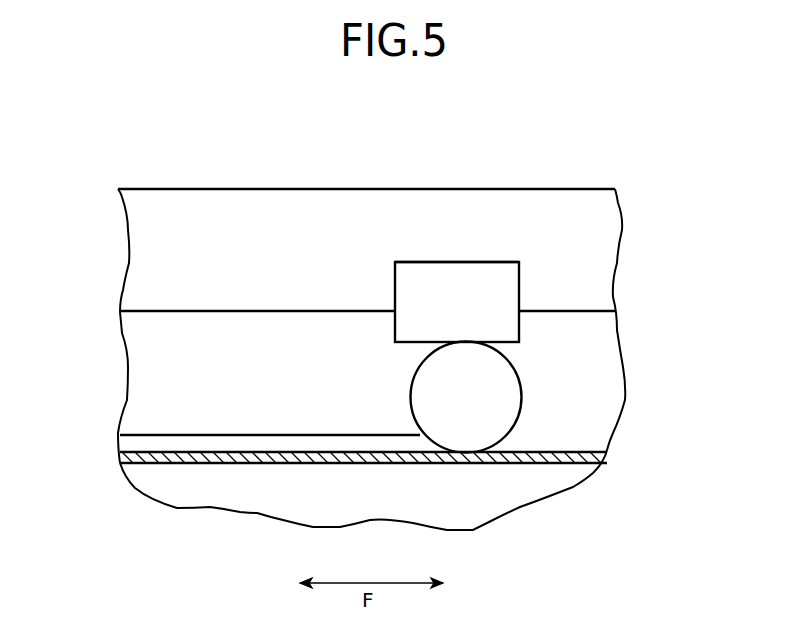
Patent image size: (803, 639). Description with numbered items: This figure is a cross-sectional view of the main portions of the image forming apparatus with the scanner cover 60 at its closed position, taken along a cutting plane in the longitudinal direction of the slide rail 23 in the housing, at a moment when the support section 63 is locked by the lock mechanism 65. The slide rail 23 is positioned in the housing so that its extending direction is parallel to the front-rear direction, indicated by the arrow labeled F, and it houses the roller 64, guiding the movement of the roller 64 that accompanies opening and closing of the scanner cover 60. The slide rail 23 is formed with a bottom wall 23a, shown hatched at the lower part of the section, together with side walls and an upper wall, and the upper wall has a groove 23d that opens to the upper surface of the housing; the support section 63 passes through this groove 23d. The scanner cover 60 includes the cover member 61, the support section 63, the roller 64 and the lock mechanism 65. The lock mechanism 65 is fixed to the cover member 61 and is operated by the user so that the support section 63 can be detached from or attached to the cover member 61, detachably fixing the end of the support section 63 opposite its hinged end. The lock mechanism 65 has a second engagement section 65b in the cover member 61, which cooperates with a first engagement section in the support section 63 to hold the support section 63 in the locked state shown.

The scanner cover 60 is at (572, 205).
The cover member 61 is at (248, 205).
The groove 23d is at (150, 314).
The lock mechanism 65 is at (505, 297).
The second engagement section 65b is at (492, 277).
The roller 64 is at (468, 433).
The support section 63 is at (268, 423).
The bottom wall 23a is at (547, 458).
The slide rail 23 is at (608, 398).